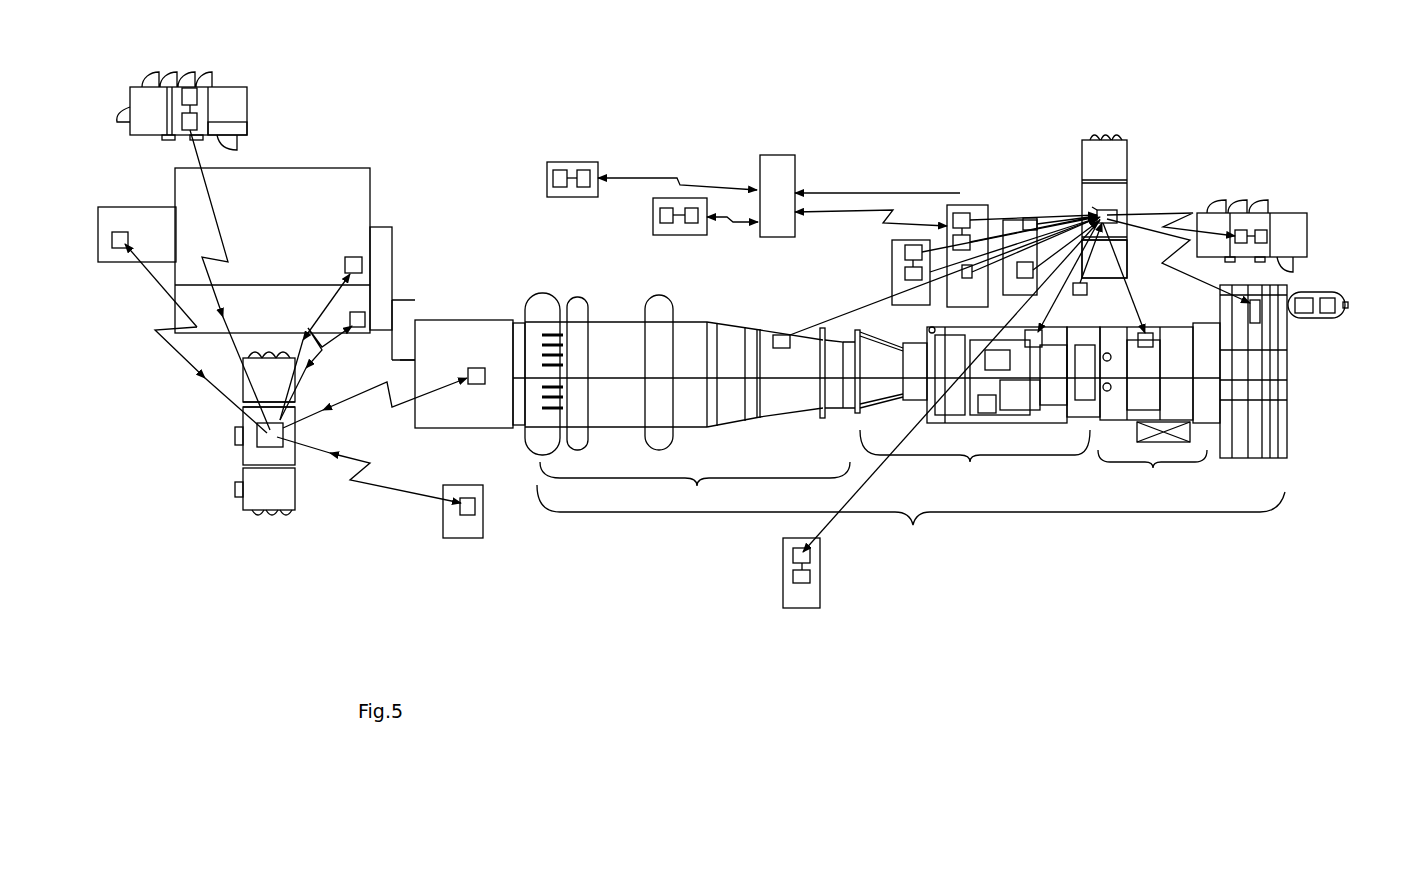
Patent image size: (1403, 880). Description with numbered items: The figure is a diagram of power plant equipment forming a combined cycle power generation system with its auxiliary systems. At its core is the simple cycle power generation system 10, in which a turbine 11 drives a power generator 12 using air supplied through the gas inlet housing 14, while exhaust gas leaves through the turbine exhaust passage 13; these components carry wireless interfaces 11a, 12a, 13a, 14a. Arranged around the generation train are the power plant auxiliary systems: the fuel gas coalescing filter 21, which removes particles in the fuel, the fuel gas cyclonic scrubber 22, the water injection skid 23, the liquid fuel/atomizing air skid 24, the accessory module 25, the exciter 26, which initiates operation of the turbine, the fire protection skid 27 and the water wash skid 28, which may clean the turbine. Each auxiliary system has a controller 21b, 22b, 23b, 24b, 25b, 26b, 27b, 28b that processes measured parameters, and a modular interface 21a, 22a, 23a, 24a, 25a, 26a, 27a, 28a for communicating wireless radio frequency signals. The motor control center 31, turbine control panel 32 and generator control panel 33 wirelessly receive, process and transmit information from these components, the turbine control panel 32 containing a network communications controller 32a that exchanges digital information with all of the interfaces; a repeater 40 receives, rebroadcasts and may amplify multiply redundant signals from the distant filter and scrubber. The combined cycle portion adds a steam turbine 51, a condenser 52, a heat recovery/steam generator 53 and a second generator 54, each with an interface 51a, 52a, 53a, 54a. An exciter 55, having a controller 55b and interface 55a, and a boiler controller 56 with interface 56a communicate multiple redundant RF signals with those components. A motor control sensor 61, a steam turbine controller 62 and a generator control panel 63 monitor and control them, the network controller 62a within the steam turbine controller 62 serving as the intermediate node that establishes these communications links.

The power generation system 10 is at (911, 520).
The turbine 11 is at (975, 407).
The interface 11a is at (1042, 335).
The power generator 12 is at (1143, 406).
The interface 12a is at (1150, 333).
The turbine exhaust passage 13 is at (866, 401).
The interface 13a is at (787, 335).
The gas inlet housing 14 is at (1267, 458).
The interface 14a is at (1250, 302).
The fuel gas coalescing filter 21 is at (560, 98).
The modular interface 21a is at (583, 188).
The controller 21b is at (556, 188).
The fuel gas cyclonic scrubber 22 is at (728, 267).
The modular interface 22a is at (690, 224).
The controller 22b is at (668, 224).
The water injection skid 23 is at (900, 240).
The modular interface 23a is at (905, 252).
The controller 23b is at (905, 273).
The liquid fuel/atomizing air skid 24 is at (947, 115).
The modular interface 24a is at (965, 212).
The controller 24b is at (953, 236).
The accessory module 25 is at (1040, 42).
The modular interface 25a is at (967, 279).
The controller 25b is at (1087, 287).
The exciter 26 is at (1253, 210).
The modular interface 26a is at (1247, 248).
The controller 26b is at (1270, 237).
The fire protection skid 27 is at (1347, 318).
The modular interface 27a is at (1290, 320).
The controller 27b is at (1318, 313).
The water wash skid 28 is at (803, 608).
The modular interface 28a is at (810, 557).
The controller 28b is at (810, 581).
The motor control center 31 is at (1137, 203).
The turbine control panel 32 is at (1112, 210).
The network communications controller 32a is at (1092, 207).
The generator control panel 33 is at (1133, 245).
The repeater 40 is at (777, 153).
The steam turbine 51 is at (317, 174).
The interface 51a is at (362, 259).
The condenser 52 is at (353, 301).
The interface 52a is at (367, 318).
The heat recovery/steam generator 53 is at (462, 374).
The interface 53a is at (478, 386).
The second generator 54 is at (117, 211).
The interface 54a is at (120, 248).
The exciter 55 is at (249, 103).
The interface 55a is at (197, 124).
The controller 55b is at (197, 95).
The boiler controller 56 is at (503, 539).
The interface 56a is at (460, 508).
The motor control sensor 61 is at (247, 392).
The steam turbine controller 62 is at (247, 454).
The network controller 62a is at (290, 444).
The generator control panel 63 is at (285, 508).